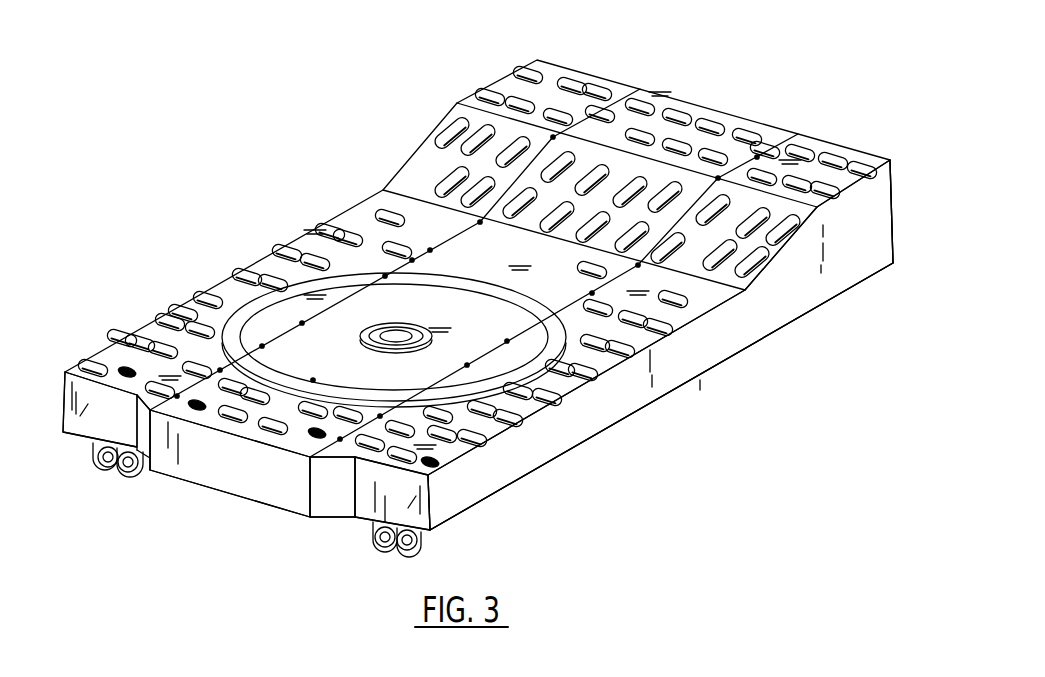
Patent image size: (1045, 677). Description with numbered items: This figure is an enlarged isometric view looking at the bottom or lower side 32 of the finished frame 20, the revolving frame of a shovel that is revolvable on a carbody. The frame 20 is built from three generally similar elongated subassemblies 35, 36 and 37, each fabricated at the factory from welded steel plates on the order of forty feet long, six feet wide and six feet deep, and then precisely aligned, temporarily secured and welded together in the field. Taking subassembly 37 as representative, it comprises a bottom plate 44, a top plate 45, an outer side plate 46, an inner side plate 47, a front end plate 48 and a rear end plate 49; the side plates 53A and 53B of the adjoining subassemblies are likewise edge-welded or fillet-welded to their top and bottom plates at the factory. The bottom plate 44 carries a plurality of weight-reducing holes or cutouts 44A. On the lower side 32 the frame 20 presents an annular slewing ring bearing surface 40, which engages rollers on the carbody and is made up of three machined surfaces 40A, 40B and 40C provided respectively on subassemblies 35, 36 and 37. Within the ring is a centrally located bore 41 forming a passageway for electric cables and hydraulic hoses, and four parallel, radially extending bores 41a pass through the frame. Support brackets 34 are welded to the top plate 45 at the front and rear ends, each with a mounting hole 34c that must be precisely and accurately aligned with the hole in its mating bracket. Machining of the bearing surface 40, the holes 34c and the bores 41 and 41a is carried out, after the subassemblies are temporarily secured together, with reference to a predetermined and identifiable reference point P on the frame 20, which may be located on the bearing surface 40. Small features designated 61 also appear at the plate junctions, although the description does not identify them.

The frame 20 is at (385, 148).
The lower side 32 is at (357, 207).
The support brackets 34 is at (125, 478).
The mounting hole 34c is at (413, 545).
The subassembly 35 is at (359, 529).
The subassembly 36 is at (223, 501).
The subassembly 37 is at (80, 449).
The slewing ring bearing surface 40 is at (421, 320).
The machined surface 40A is at (553, 360).
The machined surface 40B is at (403, 384).
The machined surface 40C is at (242, 308).
The bore 41 is at (395, 326).
The bores 41a is at (136, 341).
The bottom plate 44 is at (150, 322).
The weight-reducing holes or cutouts 44A is at (598, 90).
The top plate 45 is at (607, 430).
The outer side plate 46 is at (688, 368).
The inner side plate 47 is at (414, 260).
The front end plate 48 is at (895, 229).
The rear end plate 49 is at (82, 422).
The side plate 53A is at (316, 486).
The side plate 53B is at (140, 473).
The fasteners 61 is at (264, 346).
The reference point P is at (314, 380).